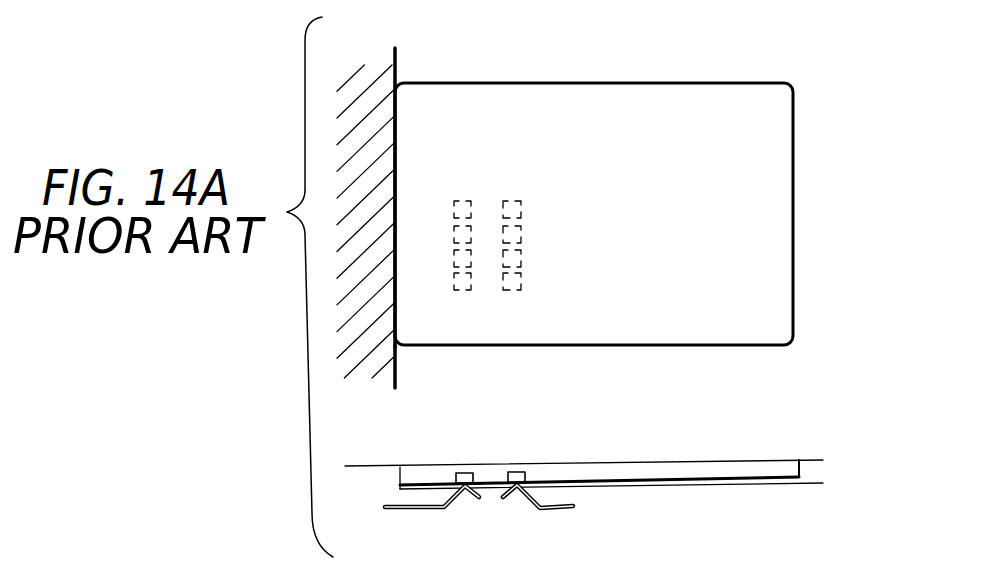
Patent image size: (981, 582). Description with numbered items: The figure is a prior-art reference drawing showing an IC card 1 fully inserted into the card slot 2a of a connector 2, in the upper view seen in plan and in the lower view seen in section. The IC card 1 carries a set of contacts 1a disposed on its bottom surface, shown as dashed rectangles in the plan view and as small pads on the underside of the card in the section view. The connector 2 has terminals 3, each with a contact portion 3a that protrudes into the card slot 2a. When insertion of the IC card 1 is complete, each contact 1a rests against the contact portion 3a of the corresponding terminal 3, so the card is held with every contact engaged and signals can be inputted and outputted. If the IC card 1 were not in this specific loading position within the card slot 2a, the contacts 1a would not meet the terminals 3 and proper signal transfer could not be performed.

The IC card 1 is at (752, 86).
The contact 1a is at (517, 200).
The connector 2 is at (364, 83).
The card slot 2a is at (410, 362).
The terminal 3 is at (484, 525).
The contact portion 3a is at (466, 497).